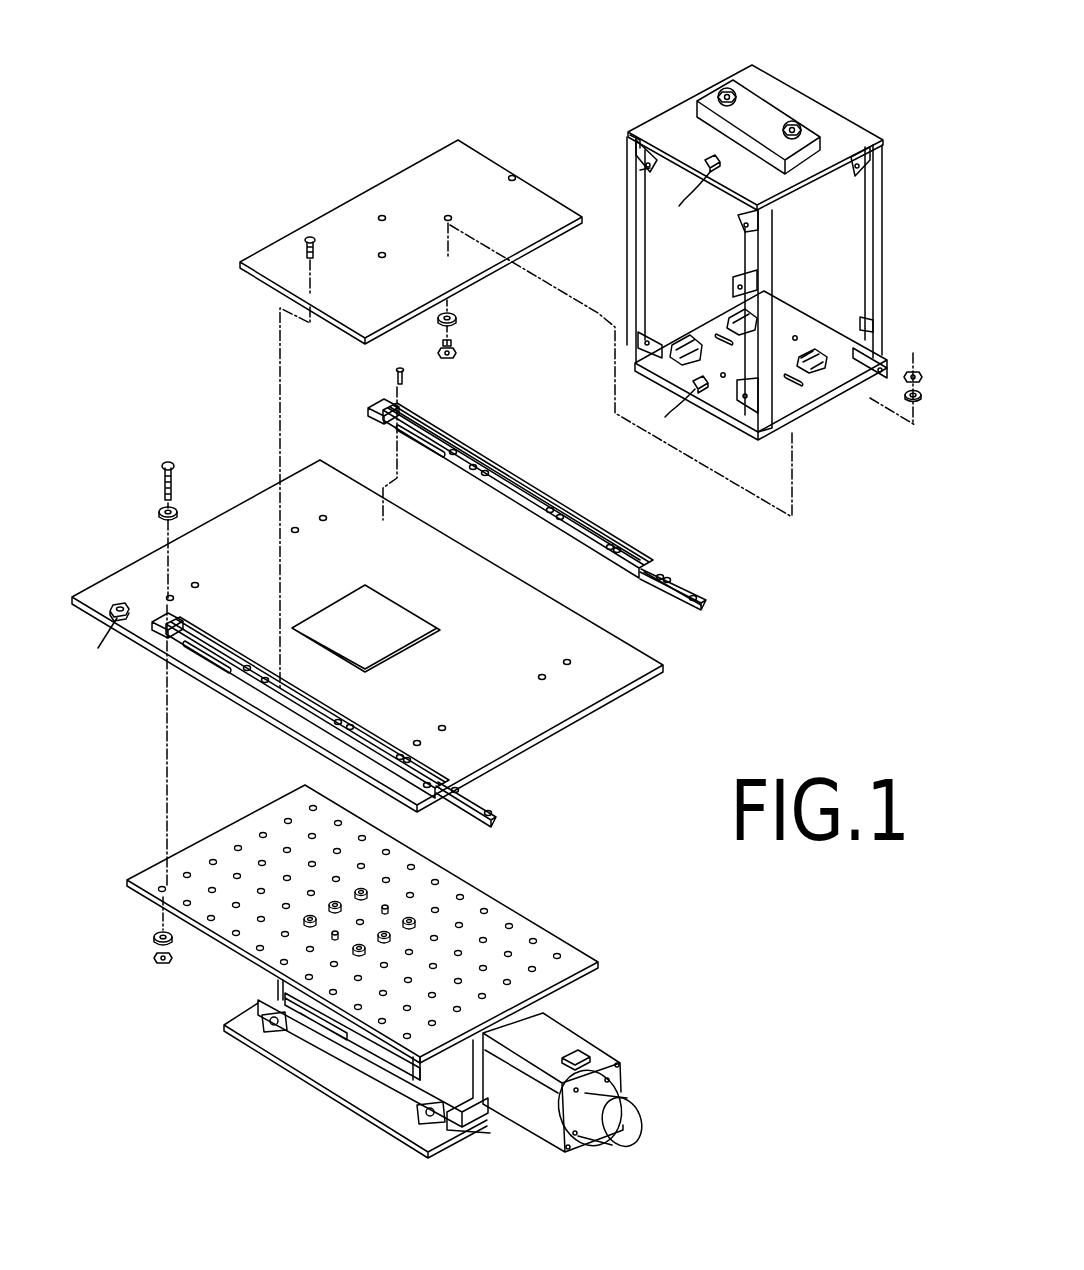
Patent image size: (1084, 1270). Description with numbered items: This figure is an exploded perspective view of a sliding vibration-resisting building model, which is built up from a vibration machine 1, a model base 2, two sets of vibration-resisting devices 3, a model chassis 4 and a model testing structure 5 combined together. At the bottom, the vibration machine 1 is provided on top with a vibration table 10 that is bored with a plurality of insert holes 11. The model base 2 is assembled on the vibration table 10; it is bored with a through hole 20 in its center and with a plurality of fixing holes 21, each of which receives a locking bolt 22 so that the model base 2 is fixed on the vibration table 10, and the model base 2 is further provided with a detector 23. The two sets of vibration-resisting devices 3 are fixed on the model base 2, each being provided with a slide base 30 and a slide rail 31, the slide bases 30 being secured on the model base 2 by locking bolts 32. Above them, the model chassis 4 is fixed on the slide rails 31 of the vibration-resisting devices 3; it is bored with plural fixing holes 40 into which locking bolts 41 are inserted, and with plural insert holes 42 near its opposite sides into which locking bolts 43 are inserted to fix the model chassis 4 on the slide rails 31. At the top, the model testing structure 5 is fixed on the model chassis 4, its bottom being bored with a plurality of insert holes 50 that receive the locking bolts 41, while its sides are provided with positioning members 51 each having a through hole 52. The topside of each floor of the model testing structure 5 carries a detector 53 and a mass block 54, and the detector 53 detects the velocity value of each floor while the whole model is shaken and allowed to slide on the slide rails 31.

The vibration machine 1 is at (585, 1017).
The model base 2 is at (562, 710).
The vibration-resisting device 3 is at (543, 488).
The model chassis 4 is at (345, 207).
The model testing structure 5 is at (888, 222).
The vibration table 10 is at (578, 963).
The insert hole 11 is at (163, 888).
The through hole 20 is at (395, 643).
The fixing hole 21 is at (170, 598).
The locking bolt 22 is at (165, 470).
The detector 23 is at (118, 605).
The slide base 30 is at (563, 530).
The slide rail 31 is at (668, 598).
The locking bolt 32 is at (397, 374).
The fixing hole 40 is at (382, 216).
The locking bolt 41 is at (452, 350).
The insert hole 42 is at (310, 292).
The locking bolt 43 is at (305, 243).
The insert hole 50 is at (795, 388).
The positioning member 51 is at (640, 158).
The through hole 52 is at (645, 172).
The detector 53 is at (705, 160).
The mass block 54 is at (770, 105).